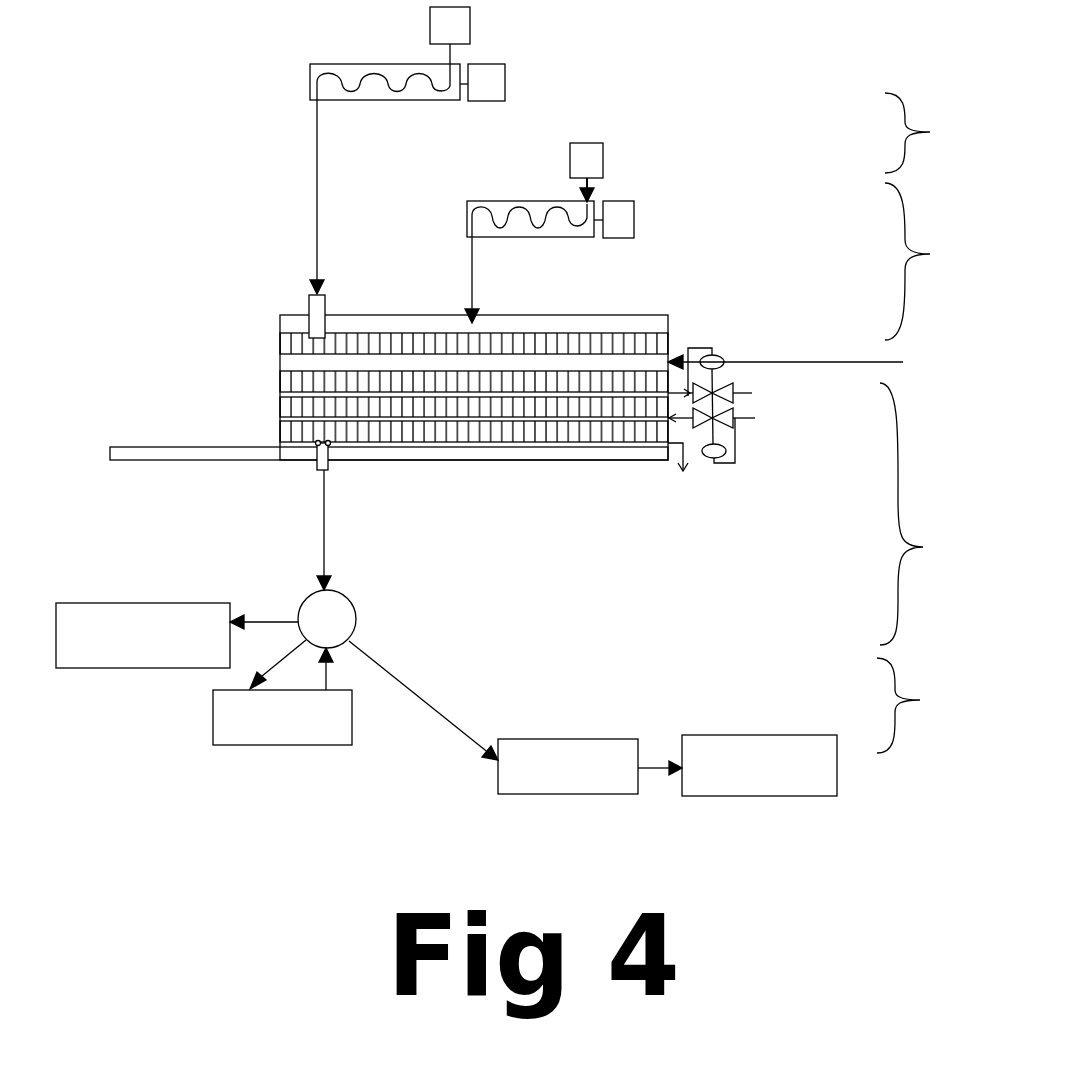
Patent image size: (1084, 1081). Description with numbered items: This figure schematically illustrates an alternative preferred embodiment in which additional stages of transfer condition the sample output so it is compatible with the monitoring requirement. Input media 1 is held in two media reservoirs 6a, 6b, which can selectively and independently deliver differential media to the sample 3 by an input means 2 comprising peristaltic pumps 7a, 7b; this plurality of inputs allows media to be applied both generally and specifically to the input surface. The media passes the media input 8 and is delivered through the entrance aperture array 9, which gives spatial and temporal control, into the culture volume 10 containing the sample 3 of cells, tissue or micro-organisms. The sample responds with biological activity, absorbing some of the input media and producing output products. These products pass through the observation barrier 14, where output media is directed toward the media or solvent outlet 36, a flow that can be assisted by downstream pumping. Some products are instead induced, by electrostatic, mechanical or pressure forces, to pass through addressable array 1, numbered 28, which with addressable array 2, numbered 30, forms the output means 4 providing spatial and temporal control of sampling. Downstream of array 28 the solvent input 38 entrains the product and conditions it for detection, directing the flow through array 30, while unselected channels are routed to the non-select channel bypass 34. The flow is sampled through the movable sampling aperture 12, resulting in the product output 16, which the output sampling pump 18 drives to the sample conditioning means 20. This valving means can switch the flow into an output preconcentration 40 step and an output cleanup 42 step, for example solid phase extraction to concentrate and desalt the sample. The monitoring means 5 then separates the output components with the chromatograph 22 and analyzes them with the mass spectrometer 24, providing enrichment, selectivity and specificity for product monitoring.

The input media 1 is at (917, 133).
The input means 2 is at (918, 261).
The sample 3 is at (811, 360).
The output means 4 is at (915, 514).
The monitoring means 5 is at (917, 708).
The media reservoir 6a is at (520, 46).
The media reservoir 6b is at (646, 168).
The peristaltic pump 7a is at (480, 178).
The peristaltic pump 7b is at (617, 221).
The media input 8 is at (510, 280).
The entrance aperture array 9 is at (141, 330).
The culture volume 10 is at (140, 357).
The movable sampling aperture 12 is at (382, 483).
The observation barrier 14 is at (140, 380).
The product output 16 is at (425, 530).
The output sampling pump 18 is at (177, 620).
The sample conditioning means 20 is at (356, 619).
The chromatograph 22 is at (493, 717).
The mass spectrometer 24 is at (737, 749).
The addressable array 1 28 is at (140, 410).
The addressable array 2 30 is at (140, 437).
The non-select channel bypass 34 is at (689, 486).
The media or solvent outlet 36 is at (852, 373).
The solvent input 38 is at (769, 435).
The output preconcentration 40 is at (263, 692).
The output cleanup 42 is at (362, 695).